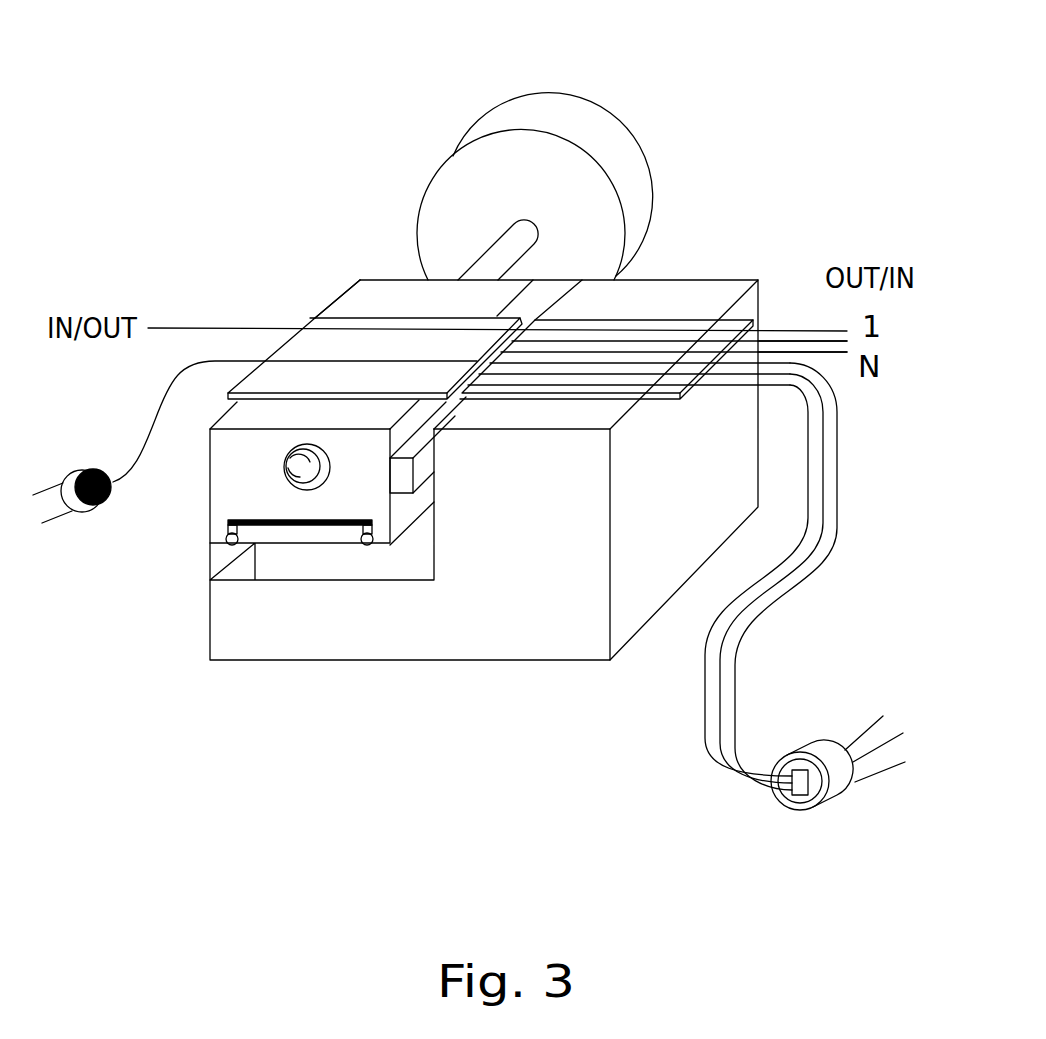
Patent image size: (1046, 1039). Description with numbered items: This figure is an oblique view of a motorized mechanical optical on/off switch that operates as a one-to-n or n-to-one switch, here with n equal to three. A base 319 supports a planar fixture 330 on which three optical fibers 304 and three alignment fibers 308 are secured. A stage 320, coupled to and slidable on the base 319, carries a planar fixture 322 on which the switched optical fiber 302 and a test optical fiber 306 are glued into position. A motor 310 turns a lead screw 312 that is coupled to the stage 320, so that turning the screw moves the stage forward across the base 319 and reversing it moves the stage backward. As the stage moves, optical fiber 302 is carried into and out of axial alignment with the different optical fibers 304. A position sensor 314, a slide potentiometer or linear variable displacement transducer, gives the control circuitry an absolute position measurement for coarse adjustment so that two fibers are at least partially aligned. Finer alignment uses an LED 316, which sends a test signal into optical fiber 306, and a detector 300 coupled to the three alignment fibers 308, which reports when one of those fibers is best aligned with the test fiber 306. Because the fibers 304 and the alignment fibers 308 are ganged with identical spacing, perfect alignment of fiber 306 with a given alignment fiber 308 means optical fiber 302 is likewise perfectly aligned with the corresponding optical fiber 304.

The detector 300 is at (768, 811).
The optical fiber 302 is at (208, 323).
The optical fibers 304 is at (770, 324).
The optical fiber 306 is at (130, 480).
The alignment fibers 308 is at (752, 678).
The motor 310 is at (605, 135).
The lead screw 312 is at (298, 477).
The position sensor 314 is at (400, 476).
The LED 316 is at (80, 520).
The base 319 is at (412, 664).
The stage 320 is at (375, 300).
The planar fixture 322 is at (317, 343).
The planar fixture 330 is at (682, 322).